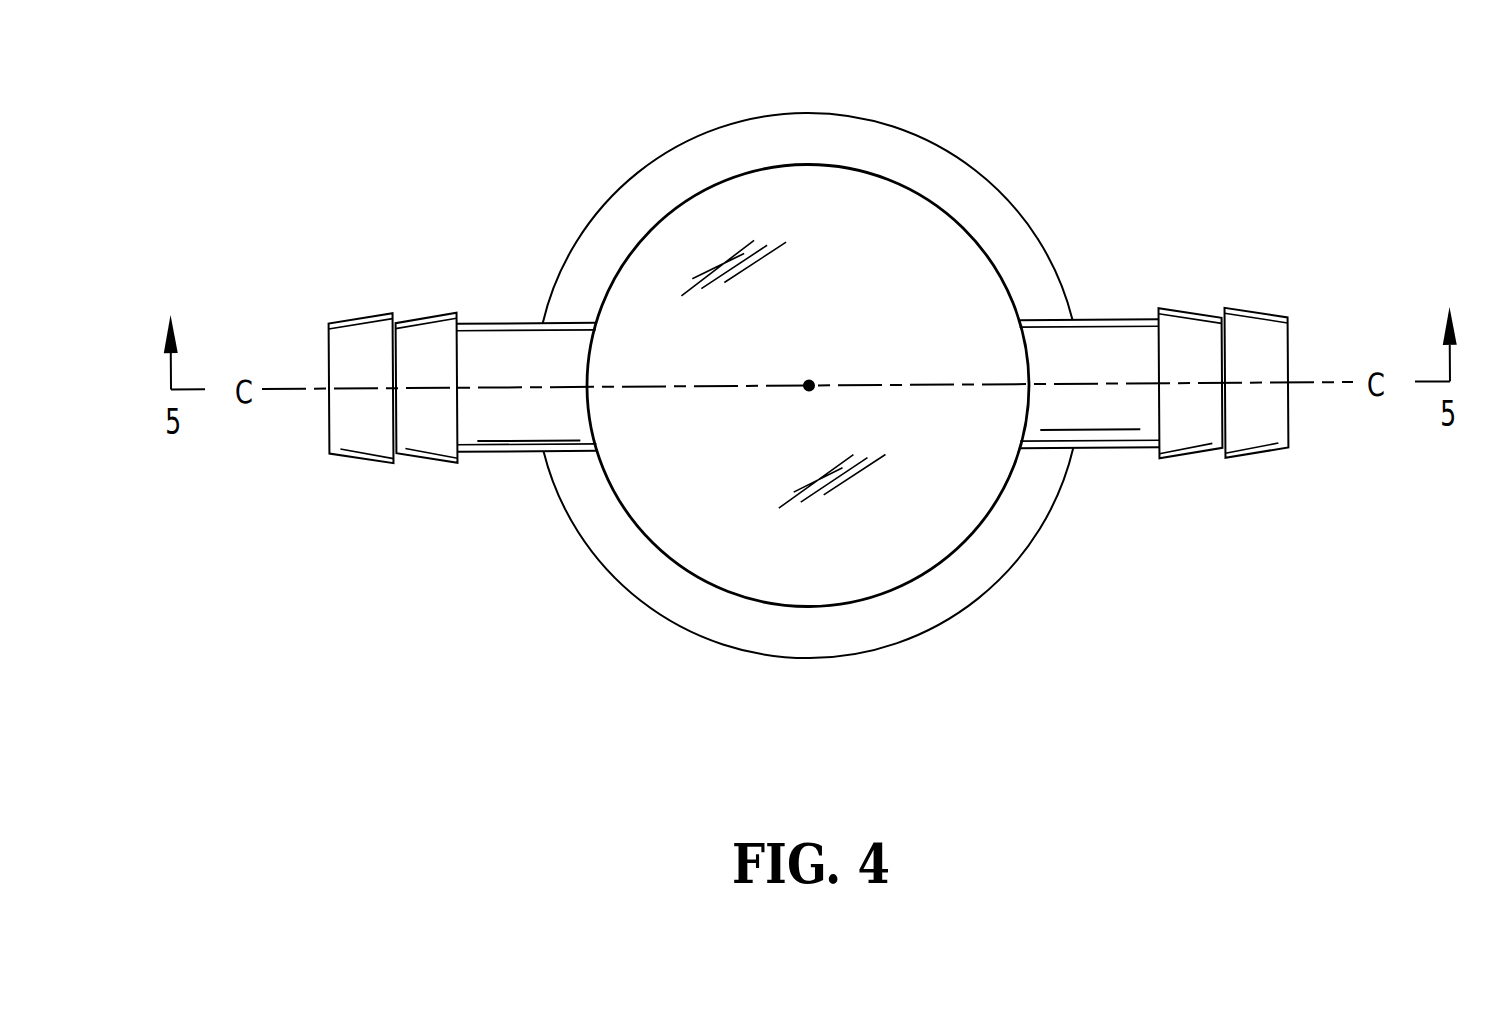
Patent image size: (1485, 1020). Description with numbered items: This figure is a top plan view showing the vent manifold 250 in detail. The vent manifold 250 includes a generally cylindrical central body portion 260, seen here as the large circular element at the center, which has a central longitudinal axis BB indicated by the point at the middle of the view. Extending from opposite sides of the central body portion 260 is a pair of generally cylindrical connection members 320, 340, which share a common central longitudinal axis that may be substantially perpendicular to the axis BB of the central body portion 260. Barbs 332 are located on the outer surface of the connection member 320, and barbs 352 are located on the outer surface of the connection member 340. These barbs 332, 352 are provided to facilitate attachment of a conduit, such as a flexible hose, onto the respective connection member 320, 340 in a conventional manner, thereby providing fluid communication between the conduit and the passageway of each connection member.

The vent manifold 250 is at (1116, 92).
The central body portion 260 is at (890, 236).
The connection member 320 is at (485, 266).
The connection member 340 is at (1133, 257).
The barbs 332 is at (418, 489).
The barbs 352 is at (1201, 482).
The central longitudinal axis BB is at (809, 385).